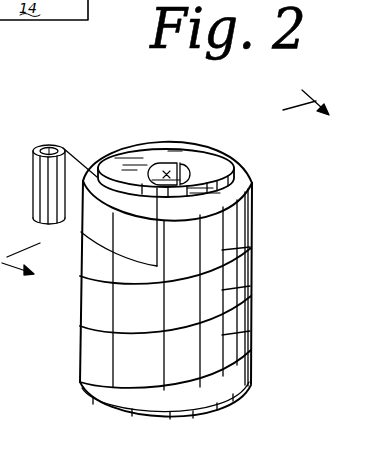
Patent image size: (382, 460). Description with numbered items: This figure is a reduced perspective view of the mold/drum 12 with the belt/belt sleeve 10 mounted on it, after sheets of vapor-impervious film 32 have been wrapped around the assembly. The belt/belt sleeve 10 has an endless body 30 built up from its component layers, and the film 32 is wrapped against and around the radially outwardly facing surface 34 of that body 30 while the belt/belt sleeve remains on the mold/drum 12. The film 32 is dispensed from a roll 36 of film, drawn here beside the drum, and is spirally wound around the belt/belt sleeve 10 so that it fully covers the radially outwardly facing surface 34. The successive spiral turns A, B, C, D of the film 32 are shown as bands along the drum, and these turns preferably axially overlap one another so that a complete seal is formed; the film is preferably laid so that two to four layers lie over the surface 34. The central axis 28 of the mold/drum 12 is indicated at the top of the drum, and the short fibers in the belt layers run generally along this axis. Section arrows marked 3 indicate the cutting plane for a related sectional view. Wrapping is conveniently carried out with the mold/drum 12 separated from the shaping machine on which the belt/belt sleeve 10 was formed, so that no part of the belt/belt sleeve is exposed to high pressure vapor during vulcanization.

The belt/belt sleeve 10 is at (228, 202).
The mold/drum 12 is at (214, 169).
The central axis 28 is at (166, 173).
The endless body 30 is at (242, 182).
The vapor-impervious film 32 is at (76, 168).
The radially outwardly facing surface 34 is at (252, 227).
The roll 36 is at (40, 145).
The section line 3- 3 is at (173, 194).
The turn A is at (245, 388).
The turn B is at (251, 333).
The turn C is at (251, 297).
The turn D is at (251, 248).